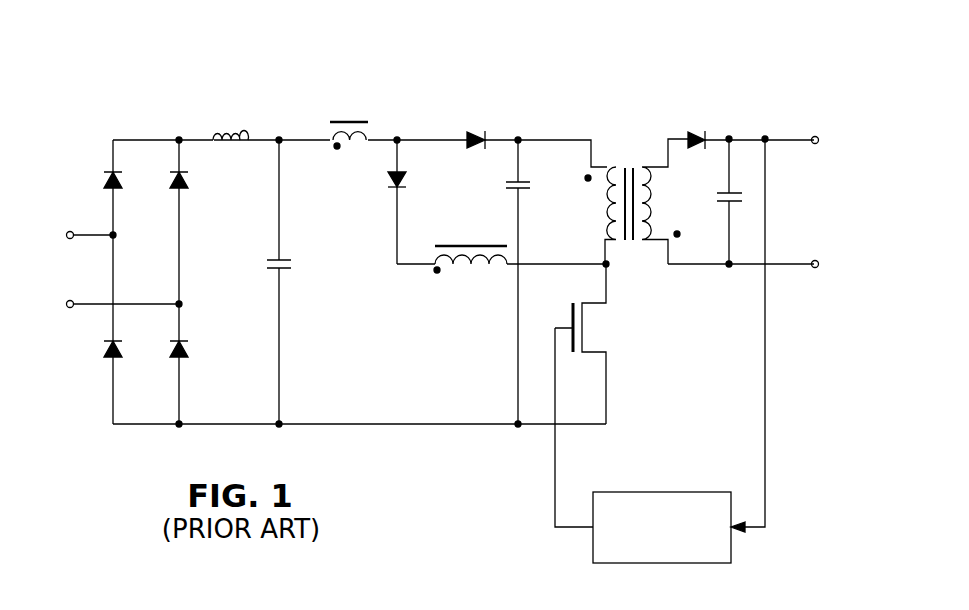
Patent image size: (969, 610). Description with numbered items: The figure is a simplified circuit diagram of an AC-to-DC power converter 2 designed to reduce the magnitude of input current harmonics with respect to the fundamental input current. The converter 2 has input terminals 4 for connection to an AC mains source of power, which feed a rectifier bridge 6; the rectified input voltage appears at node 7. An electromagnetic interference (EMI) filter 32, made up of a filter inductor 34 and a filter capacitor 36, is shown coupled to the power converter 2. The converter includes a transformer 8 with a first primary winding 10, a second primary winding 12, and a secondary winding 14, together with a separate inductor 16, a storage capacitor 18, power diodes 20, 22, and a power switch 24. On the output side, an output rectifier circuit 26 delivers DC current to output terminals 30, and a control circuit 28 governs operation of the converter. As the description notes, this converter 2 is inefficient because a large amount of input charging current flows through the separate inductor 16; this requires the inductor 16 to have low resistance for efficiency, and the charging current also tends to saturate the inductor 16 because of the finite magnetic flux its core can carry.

The AC-to-DC power converter 2 is at (262, 60).
The input terminals 4 is at (68, 231).
The rectifier bridge 6 is at (188, 264).
The node 7 is at (279, 139).
The transformer 8 is at (617, 121).
The first primary winding 10 is at (611, 166).
The second primary winding 12 is at (470, 268).
The secondary winding 14 is at (641, 166).
The separate inductor 16 is at (370, 137).
The storage capacitor 18 is at (526, 181).
The power diode 20 is at (482, 133).
The power diode 22 is at (401, 181).
The power switch 24 is at (571, 321).
The output rectifier circuit 26 is at (720, 136).
The control circuit 28 is at (697, 492).
The output terminals 30 is at (817, 135).
The electromagnetic interference (EMI) filter 32 is at (245, 117).
The filter inductor 34 is at (233, 146).
The filter capacitor 36 is at (288, 259).